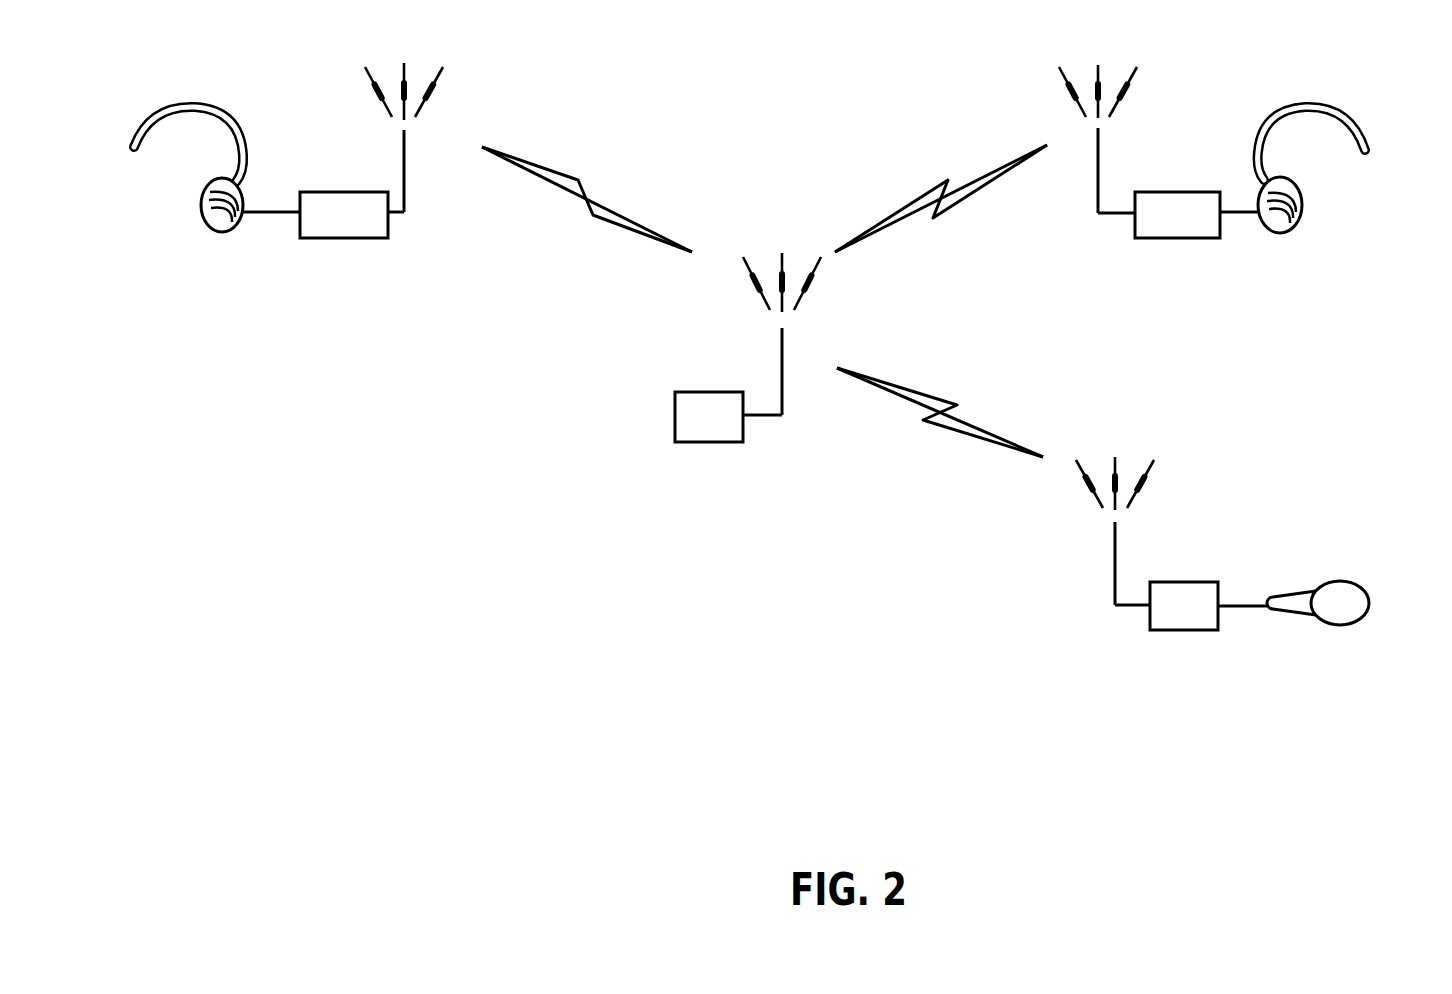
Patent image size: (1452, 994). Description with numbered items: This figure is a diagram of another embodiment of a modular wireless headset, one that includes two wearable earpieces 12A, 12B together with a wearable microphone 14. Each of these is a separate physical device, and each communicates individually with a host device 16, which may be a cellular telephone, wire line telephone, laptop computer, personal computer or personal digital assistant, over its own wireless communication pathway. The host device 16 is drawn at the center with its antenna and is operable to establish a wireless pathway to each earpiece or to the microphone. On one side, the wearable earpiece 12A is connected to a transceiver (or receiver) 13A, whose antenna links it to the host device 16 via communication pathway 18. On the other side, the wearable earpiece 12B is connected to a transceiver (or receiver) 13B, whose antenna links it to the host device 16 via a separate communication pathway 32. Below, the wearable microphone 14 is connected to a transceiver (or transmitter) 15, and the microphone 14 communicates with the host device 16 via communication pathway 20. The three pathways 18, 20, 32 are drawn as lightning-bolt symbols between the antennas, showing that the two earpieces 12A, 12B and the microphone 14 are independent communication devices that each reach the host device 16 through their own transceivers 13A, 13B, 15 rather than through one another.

The wearable earpiece 12A is at (1366, 132).
The wearable earpiece 12B is at (138, 133).
The transceiver 13A is at (1151, 231).
The transceiver 13B is at (318, 231).
The wearable microphone 14 is at (1350, 581).
The transceiver 15 is at (1166, 622).
The host device 16 is at (691, 434).
The communication pathway 18 is at (931, 193).
The communication pathway 20 is at (955, 402).
The communication pathway 32 is at (597, 187).